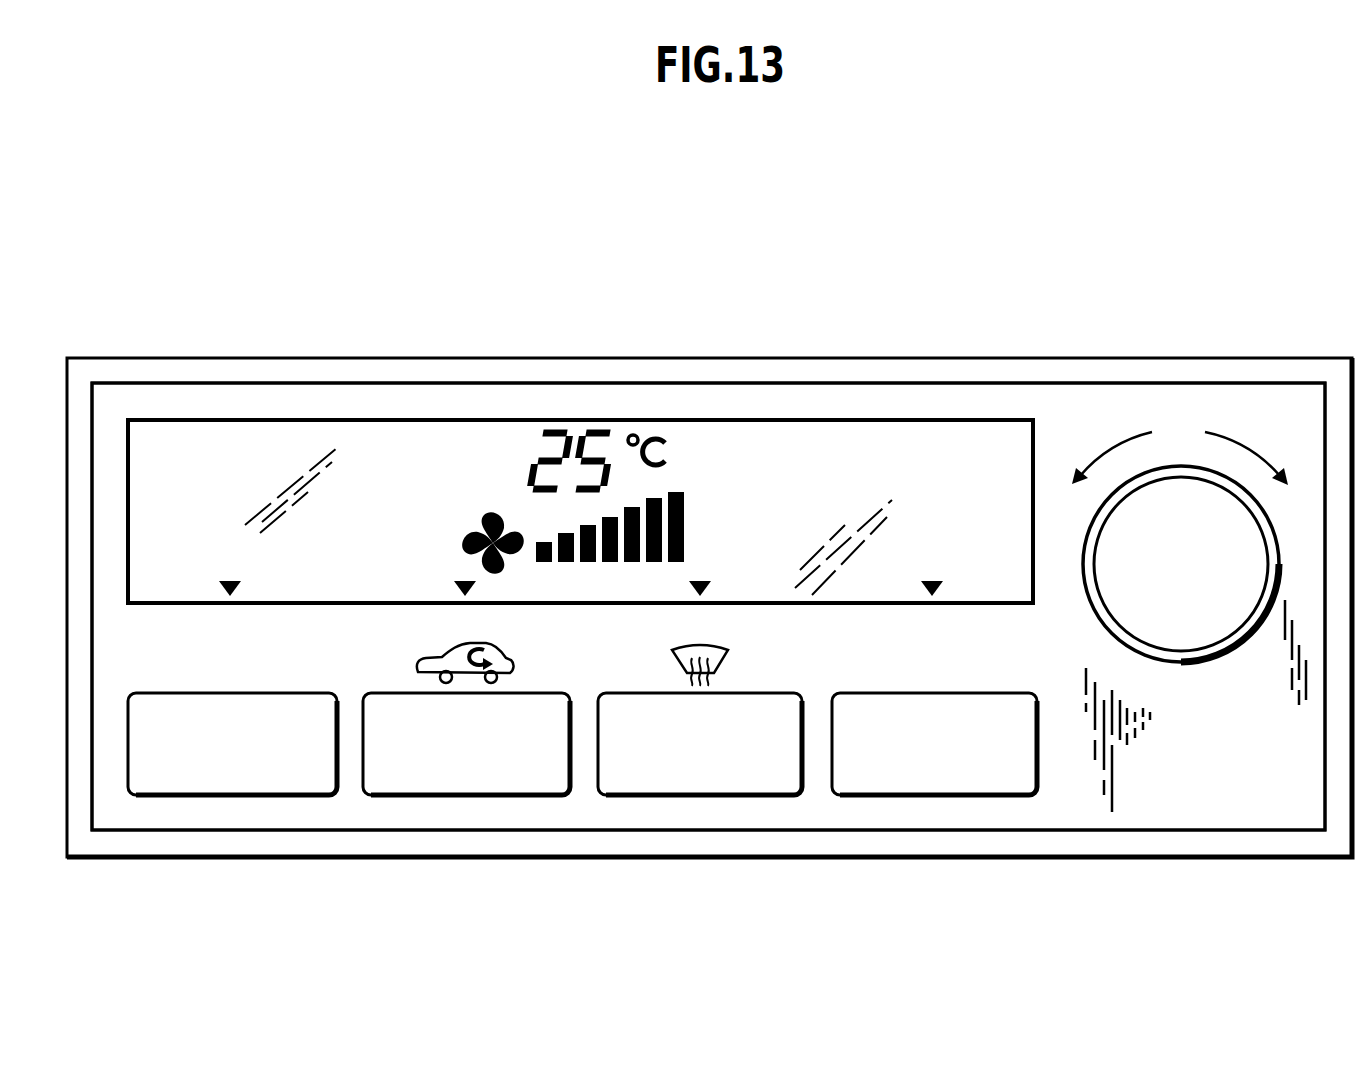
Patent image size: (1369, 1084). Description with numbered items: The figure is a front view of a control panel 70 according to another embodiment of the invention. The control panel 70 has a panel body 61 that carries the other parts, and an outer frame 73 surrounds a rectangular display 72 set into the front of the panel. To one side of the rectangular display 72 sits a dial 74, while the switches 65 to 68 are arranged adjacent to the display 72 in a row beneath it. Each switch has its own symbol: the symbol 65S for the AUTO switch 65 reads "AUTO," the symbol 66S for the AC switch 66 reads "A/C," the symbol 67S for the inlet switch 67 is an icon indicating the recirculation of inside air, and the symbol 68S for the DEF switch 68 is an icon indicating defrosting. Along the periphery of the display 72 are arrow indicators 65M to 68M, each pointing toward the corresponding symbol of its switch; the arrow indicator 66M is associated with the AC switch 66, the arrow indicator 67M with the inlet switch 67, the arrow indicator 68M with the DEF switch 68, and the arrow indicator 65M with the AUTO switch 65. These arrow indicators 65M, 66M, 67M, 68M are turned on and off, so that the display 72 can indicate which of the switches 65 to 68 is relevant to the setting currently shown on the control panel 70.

The control panel 70 is at (678, 338).
The panel body 61 is at (222, 373).
The panel face 73 is at (932, 402).
The rectangular display 72 is at (348, 438).
The rotary knob 74 is at (1180, 500).
The arrow indicator 66M is at (230, 583).
The arrow indicator 67M is at (464, 583).
The arrow indicator 68M is at (700, 583).
The arrow indicator 65M is at (932, 583).
The AC switch 66 is at (232, 780).
The inlet switch 67 is at (467, 780).
The DEF switch 68 is at (700, 780).
The AUTO switch 65 is at (933, 780).
The symbol 66S is at (193, 678).
The symbol 67S is at (418, 660).
The symbol 68S is at (675, 663).
The symbol 65S is at (878, 677).